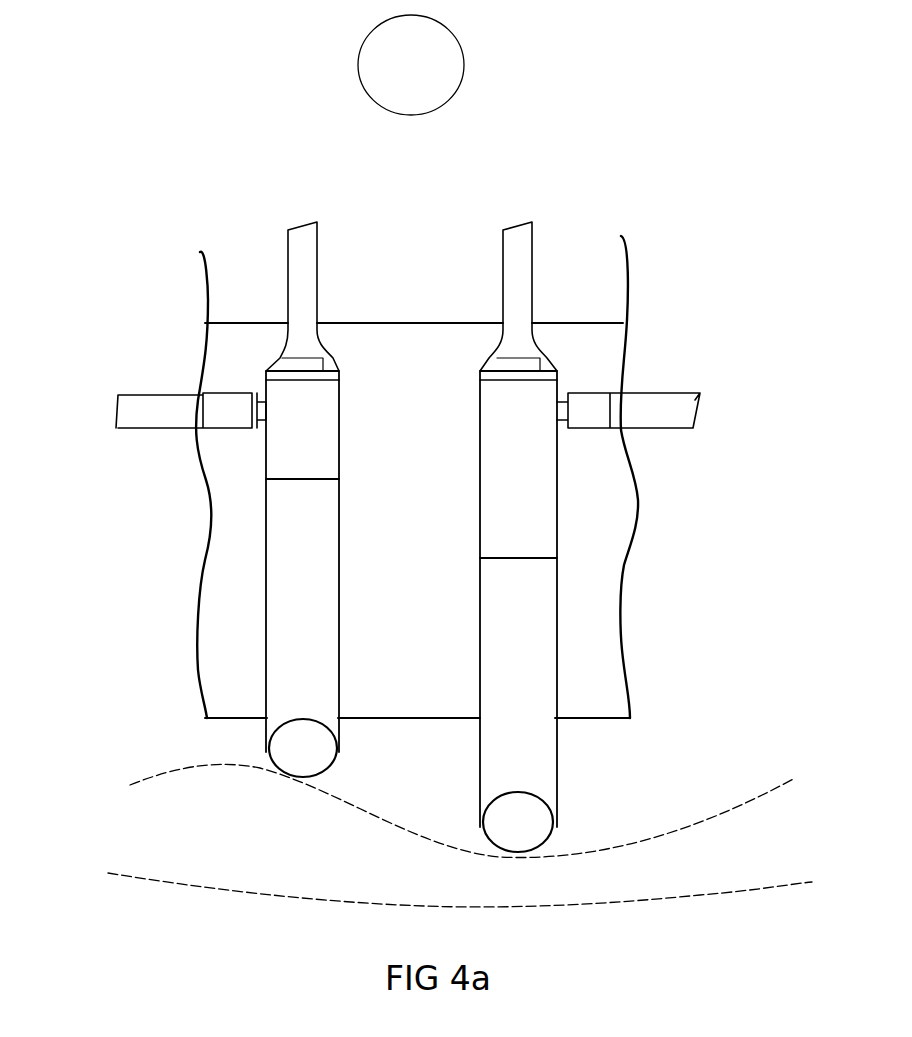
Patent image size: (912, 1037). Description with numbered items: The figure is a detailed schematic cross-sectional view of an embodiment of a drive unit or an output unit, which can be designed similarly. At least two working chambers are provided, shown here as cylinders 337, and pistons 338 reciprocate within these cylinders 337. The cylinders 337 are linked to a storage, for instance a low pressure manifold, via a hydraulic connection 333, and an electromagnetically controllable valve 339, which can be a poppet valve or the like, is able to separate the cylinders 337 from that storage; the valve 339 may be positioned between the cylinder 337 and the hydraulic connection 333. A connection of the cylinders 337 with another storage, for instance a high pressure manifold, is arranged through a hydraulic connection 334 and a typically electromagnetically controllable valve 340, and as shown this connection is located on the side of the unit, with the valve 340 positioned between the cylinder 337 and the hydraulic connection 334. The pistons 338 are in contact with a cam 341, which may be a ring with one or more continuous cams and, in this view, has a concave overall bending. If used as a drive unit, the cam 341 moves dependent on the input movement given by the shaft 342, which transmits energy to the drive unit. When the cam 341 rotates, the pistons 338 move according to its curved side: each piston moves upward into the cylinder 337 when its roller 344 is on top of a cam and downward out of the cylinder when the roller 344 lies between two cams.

The hydraulic connection 333 is at (520, 247).
The hydraulic connection 334 is at (165, 405).
The cylinders 337 is at (250, 447).
The pistons 338 is at (263, 603).
The electromagnetically controllable valve 339 is at (262, 373).
The electromagnetically controllable valve 340 is at (250, 375).
The cam 341 is at (222, 873).
The shaft 342 is at (393, 42).
The roller 344 is at (515, 827).